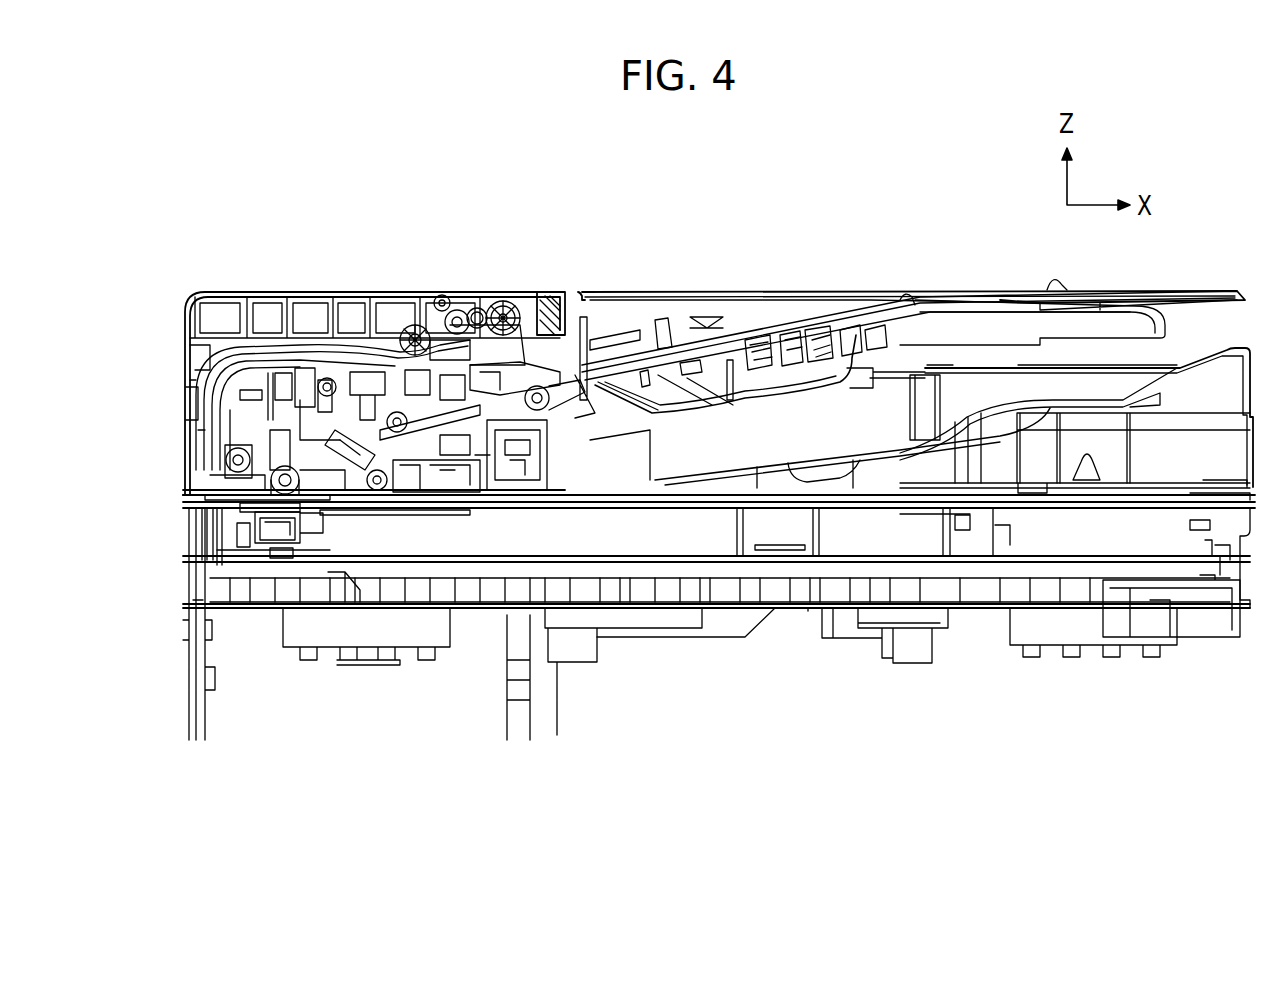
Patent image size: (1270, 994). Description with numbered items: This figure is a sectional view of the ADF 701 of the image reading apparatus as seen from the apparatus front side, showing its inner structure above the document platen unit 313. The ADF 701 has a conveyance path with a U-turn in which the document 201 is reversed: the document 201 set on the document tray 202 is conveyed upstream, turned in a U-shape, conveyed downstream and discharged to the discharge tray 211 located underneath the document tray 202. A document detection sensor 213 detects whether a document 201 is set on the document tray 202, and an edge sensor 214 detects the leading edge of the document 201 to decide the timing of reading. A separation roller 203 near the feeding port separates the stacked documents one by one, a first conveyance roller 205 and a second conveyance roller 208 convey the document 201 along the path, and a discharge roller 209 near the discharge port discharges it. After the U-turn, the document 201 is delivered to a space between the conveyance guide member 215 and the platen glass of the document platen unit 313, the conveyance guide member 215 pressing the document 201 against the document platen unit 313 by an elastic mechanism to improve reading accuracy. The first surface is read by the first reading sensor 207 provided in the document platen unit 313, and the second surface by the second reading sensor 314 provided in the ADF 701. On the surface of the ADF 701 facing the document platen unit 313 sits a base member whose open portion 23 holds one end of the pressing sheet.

The ADF 701 is at (303, 270).
The separation roller 203 is at (404, 346).
The second conveyance roller 208 is at (401, 418).
The document detection sensor 213 is at (503, 367).
The discharge roller 209 is at (545, 395).
The conveyance guide member 215 is at (285, 488).
The second reading sensor 314 is at (351, 448).
The first conveyance roller 205 is at (236, 449).
The edge sensor 214 is at (250, 499).
The document platen unit 313 is at (250, 505).
The first reading sensor 207 is at (277, 520).
The open portion 23 is at (415, 482).
The document tray 202 is at (877, 300).
The document 201 is at (779, 325).
The discharge tray 211 is at (705, 472).